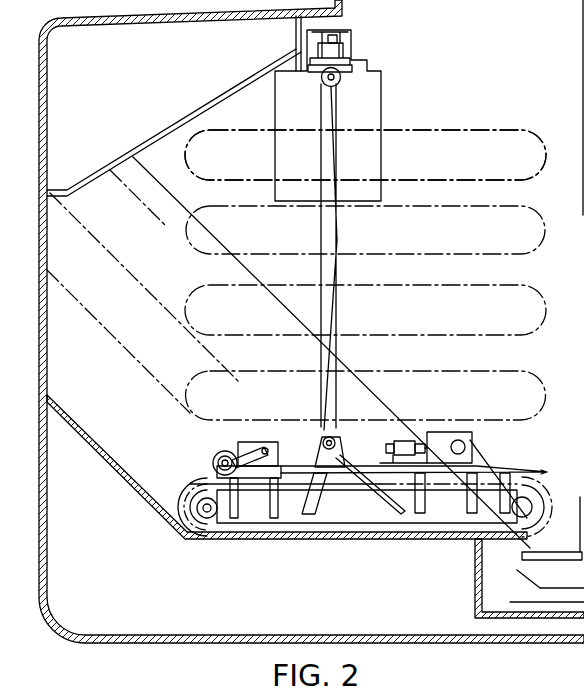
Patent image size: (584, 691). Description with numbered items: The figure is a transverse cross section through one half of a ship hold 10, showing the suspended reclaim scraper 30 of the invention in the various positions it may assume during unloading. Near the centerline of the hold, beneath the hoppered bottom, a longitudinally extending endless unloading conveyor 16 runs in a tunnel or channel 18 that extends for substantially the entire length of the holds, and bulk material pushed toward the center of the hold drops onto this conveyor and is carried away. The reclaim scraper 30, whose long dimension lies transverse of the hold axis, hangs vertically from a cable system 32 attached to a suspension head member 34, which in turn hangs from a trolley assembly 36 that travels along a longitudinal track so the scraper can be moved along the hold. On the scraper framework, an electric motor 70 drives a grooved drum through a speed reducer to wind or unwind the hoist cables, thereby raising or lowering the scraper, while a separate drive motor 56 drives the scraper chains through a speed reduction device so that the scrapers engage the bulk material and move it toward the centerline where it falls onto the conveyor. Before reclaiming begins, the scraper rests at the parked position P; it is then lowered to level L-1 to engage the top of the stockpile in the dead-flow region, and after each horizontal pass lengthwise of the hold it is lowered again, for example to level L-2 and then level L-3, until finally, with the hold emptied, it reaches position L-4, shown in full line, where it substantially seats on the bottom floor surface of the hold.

The hold 10 is at (502, 93).
The unloading conveyor 16 is at (555, 586).
The tunnel or channel 18 is at (474, 588).
The reclaim scraper 30 is at (363, 519).
The cable system 32 is at (337, 232).
The suspension head member 34 is at (347, 52).
The trolley assembly 36 is at (337, 42).
The drive motor 56 is at (392, 445).
The electric motor 70 is at (245, 452).
The parked position P is at (411, 128).
The first reclaiming level L-1 is at (536, 210).
The second reclaiming level L-2 is at (536, 290).
The third reclaiming level L-3 is at (536, 375).
The bottom position L-4 is at (533, 485).